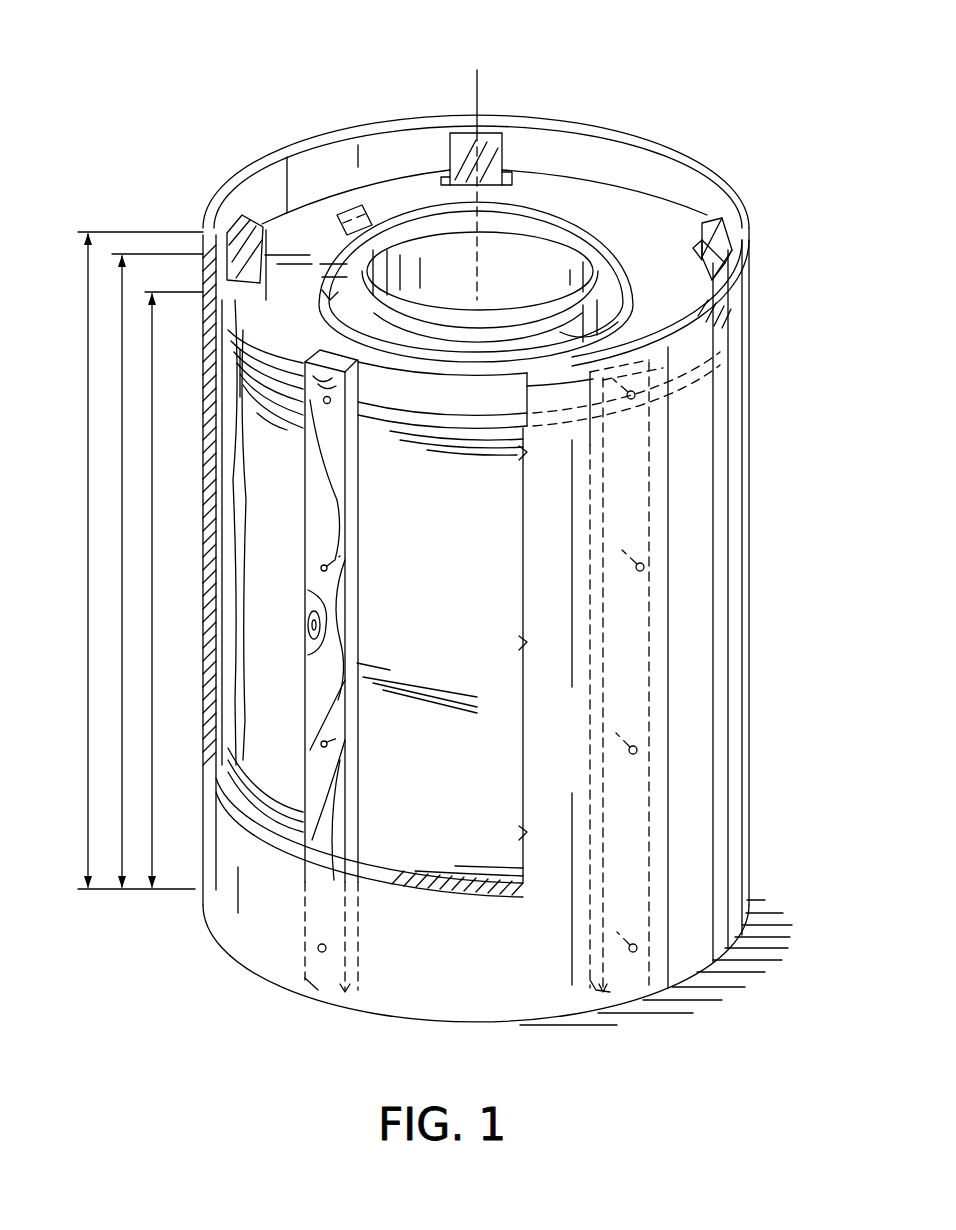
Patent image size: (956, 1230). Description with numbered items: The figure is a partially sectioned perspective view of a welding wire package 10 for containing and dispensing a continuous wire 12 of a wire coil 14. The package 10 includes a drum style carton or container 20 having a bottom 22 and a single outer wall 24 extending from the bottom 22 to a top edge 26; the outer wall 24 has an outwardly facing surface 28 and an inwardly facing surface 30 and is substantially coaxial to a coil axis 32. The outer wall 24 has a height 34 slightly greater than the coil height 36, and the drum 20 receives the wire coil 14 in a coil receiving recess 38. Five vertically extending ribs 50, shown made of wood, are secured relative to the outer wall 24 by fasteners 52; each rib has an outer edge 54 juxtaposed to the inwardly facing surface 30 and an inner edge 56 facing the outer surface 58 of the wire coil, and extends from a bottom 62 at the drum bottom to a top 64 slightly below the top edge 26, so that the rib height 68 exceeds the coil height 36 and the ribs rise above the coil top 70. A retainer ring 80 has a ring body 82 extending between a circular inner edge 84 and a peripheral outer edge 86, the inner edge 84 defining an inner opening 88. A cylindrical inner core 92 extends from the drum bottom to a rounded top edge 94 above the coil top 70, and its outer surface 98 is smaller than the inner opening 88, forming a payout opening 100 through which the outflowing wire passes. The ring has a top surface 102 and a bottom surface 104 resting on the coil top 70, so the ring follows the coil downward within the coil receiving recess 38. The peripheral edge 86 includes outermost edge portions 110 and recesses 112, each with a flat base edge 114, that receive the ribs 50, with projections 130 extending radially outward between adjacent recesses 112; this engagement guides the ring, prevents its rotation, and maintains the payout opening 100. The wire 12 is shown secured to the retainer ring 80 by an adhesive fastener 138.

The welding wire package 10 is at (744, 97).
The continuous wire 12 is at (412, 200).
The wire coil 14 is at (268, 487).
The drum style carton or container 20 is at (583, 157).
The bottom 22 is at (418, 1022).
The outer wall 24 is at (698, 440).
The top edge 26 is at (712, 190).
The outwardly facing surface 28 is at (705, 662).
The inwardly facing surface 30 is at (343, 147).
The coil axis 32 is at (477, 70).
The height 34 is at (137, 560).
The coil height 36 is at (168, 589).
The coil receiving recess 38 is at (553, 172).
The vertically extending ribs 50 is at (490, 131).
The fasteners 52 is at (648, 566).
The outer edge 54 is at (306, 533).
The inner edge 56 is at (463, 147).
The outer surface 58 is at (465, 665).
The bottom 62 is at (322, 985).
The top 64 is at (723, 233).
The height 68 is at (153, 570).
The coil top 70 is at (343, 272).
The retainer ring 80 is at (620, 192).
The ring body 82 is at (645, 222).
The inner edge 84 is at (327, 295).
The peripheral outer edge 86 is at (597, 178).
The inner opening 88 is at (616, 315).
The inner core 92 is at (392, 222).
The top edge 94 is at (261, 235).
The outer surface 98 is at (403, 337).
The payout opening 100 is at (622, 287).
The top surface 102 is at (450, 397).
The bottom surface 104 is at (243, 362).
The outermost edge portions 110 is at (589, 117).
The recesses 112 is at (235, 227).
The base edge 114 is at (461, 198).
The projections 130 is at (521, 173).
The adhesive fastener 138 is at (355, 220).